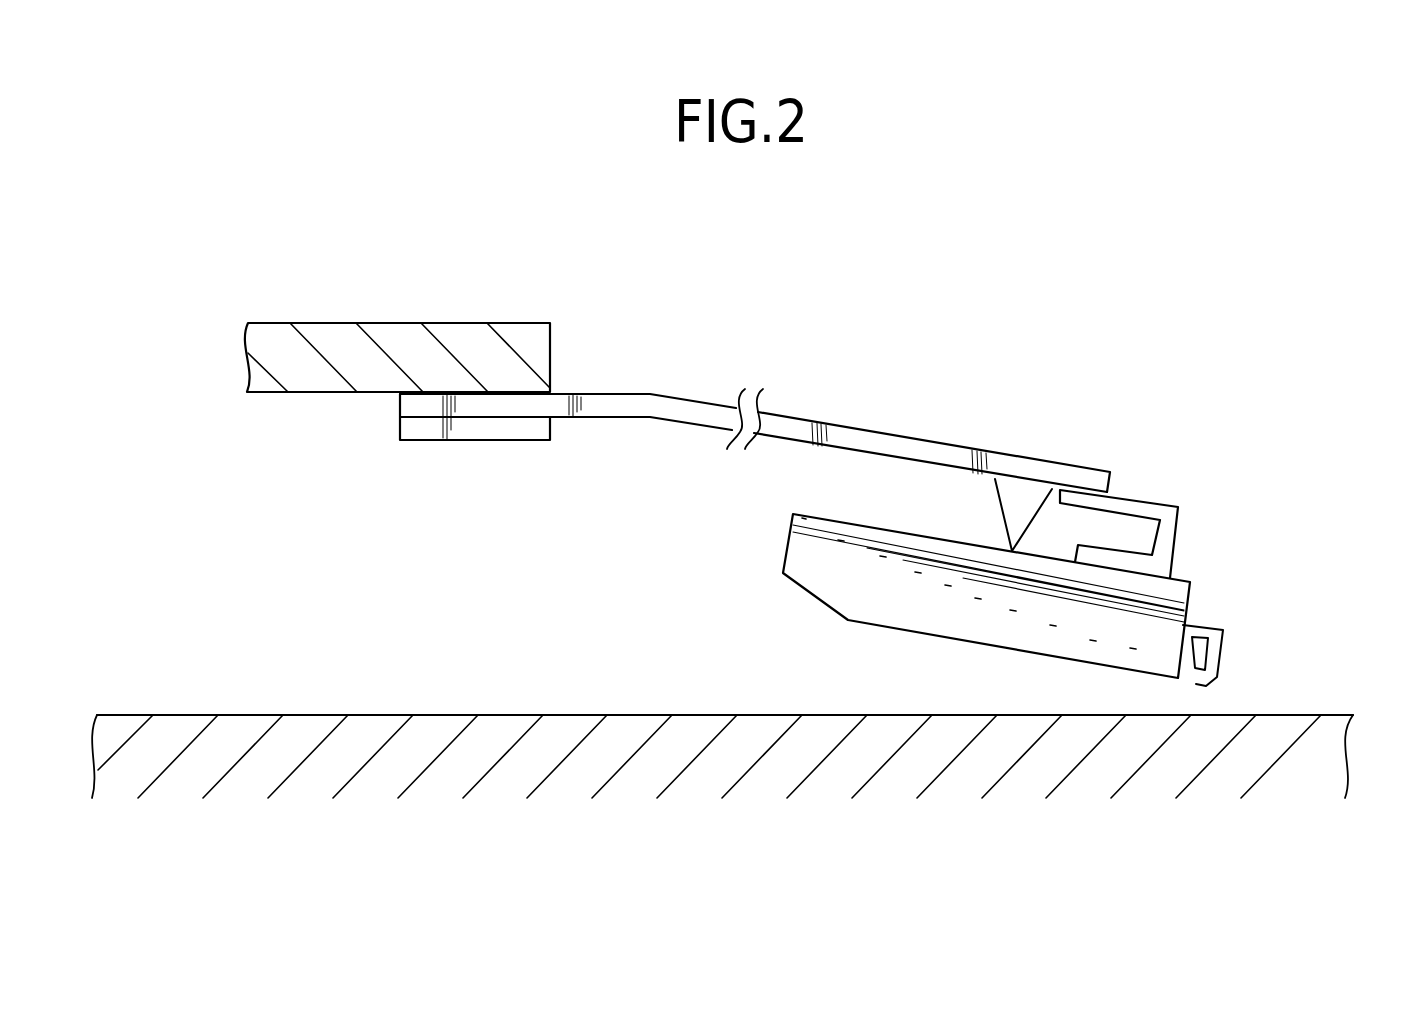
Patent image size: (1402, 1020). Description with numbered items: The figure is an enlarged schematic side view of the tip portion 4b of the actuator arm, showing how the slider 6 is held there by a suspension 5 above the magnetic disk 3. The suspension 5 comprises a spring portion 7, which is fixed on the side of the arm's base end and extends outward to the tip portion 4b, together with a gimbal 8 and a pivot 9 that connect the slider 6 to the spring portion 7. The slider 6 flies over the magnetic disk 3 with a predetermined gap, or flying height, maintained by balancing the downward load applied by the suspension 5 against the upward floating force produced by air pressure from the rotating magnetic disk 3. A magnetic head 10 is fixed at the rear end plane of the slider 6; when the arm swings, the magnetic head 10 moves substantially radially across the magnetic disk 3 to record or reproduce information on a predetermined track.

The magnetic disk 3 is at (1317, 770).
The tip portion of the arm 4b is at (558, 314).
The suspension 5 is at (1038, 391).
The slider 6 is at (786, 549).
The spring portion 7 is at (862, 436).
The gimbal 8 is at (1173, 547).
The pivot 9 is at (1000, 512).
The magnetic head 10 is at (1220, 659).